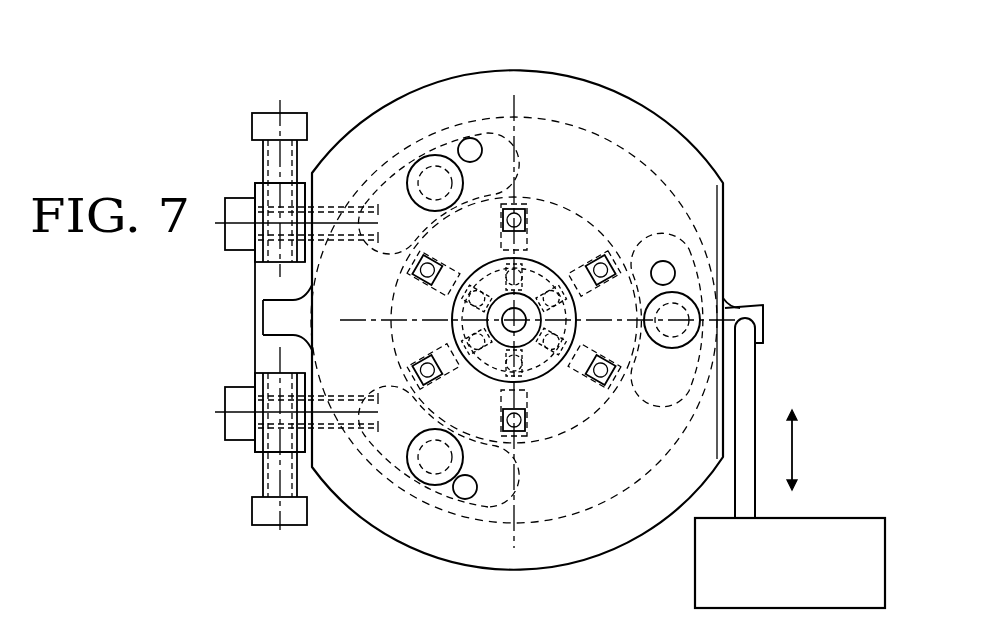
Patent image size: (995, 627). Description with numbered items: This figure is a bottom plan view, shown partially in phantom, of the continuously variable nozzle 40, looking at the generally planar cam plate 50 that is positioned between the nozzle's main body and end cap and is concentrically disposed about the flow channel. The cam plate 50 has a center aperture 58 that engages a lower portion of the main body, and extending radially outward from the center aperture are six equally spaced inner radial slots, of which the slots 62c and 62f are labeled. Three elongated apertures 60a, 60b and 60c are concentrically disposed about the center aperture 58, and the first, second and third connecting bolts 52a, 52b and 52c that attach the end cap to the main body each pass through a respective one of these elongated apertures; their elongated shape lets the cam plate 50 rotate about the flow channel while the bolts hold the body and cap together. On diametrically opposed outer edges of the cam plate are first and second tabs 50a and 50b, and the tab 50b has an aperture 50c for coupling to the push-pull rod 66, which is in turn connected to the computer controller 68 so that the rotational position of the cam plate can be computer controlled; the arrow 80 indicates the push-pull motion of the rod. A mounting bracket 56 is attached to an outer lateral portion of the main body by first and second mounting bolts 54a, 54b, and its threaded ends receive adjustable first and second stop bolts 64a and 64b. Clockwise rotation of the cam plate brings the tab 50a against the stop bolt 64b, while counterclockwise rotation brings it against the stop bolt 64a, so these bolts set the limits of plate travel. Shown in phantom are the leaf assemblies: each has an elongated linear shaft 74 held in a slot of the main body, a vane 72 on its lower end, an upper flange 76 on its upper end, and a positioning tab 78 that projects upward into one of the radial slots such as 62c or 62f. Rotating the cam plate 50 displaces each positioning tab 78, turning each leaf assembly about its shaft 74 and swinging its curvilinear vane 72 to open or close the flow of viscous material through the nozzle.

The continuously variable nozzle 40 is at (203, 174).
The cam plate 50 is at (765, 292).
The first tab 50a is at (258, 302).
The second tab 50b is at (767, 320).
The aperture 50c is at (740, 298).
The first connecting bolt 52a is at (418, 162).
The second connecting bolt 52b is at (683, 295).
The third connecting bolt 52c is at (422, 480).
The first mounting bolt 54a is at (232, 245).
The second mounting bolt 54b is at (235, 427).
The mounting bracket 56 is at (263, 350).
The center aperture 58 is at (538, 248).
The elongated aperture 60a is at (460, 150).
The elongated aperture 60b is at (676, 267).
The elongated aperture 60c is at (460, 497).
The inner radial slot 62c is at (640, 400).
The inner radial slot 62f is at (414, 282).
The first stop bolt 64a is at (255, 507).
The second stop bolt 64b is at (258, 122).
The push-pull rod 66 is at (747, 407).
The computer controller 68 is at (790, 563).
The vane 72 is at (553, 590).
The elongated linear shaft 74 is at (475, 298).
The upper flange 76 is at (493, 260).
The positioning tab 78 is at (462, 270).
The direction of motion 80 is at (793, 457).